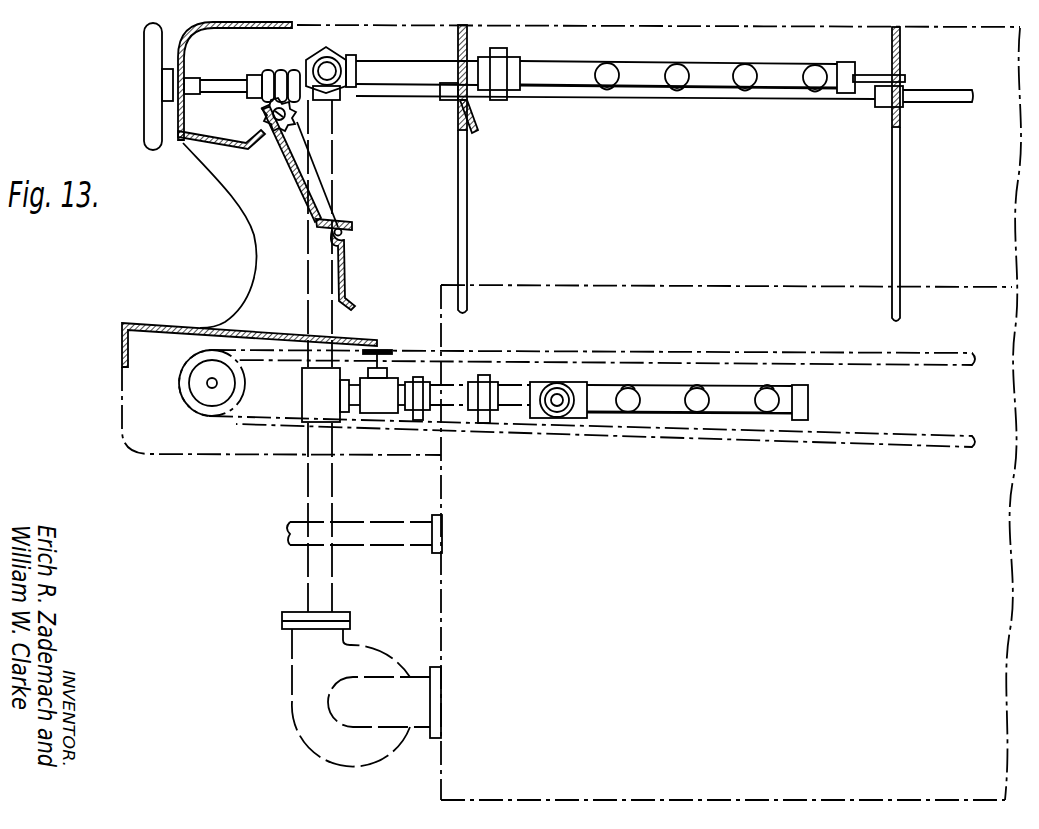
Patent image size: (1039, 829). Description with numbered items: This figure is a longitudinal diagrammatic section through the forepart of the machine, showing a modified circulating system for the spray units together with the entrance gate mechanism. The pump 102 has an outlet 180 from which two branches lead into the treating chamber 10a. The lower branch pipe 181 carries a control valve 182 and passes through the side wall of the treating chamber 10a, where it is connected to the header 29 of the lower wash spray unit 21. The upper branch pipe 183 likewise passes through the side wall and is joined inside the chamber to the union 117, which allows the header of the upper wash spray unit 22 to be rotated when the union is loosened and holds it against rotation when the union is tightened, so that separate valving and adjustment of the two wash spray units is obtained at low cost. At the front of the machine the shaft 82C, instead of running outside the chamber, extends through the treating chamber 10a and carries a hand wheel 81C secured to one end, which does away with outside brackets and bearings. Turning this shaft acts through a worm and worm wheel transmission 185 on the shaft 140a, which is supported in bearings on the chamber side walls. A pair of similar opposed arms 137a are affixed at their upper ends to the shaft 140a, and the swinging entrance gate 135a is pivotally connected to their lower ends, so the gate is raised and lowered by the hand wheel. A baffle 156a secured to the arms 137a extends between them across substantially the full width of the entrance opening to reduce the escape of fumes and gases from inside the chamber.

The treating chamber 10a is at (247, 232).
The lower wash spray unit 21 is at (746, 396).
The upper wash spray unit 22 is at (787, 70).
The header 29 is at (558, 412).
The hand wheel 81C is at (148, 81).
The shaft 82C is at (214, 86).
The pump 102 is at (297, 678).
The union 117 is at (497, 96).
The swinging entrance gate 135a is at (351, 267).
The arms 137a is at (320, 192).
The shaft 140a is at (298, 118).
The baffle 156a is at (297, 180).
The pump outlet 180 is at (307, 580).
The lower branch pipe 181 is at (455, 406).
The control valve 182 is at (374, 350).
The upper branch pipe 183 is at (398, 68).
The worm and worm wheel transmission 185 is at (256, 105).